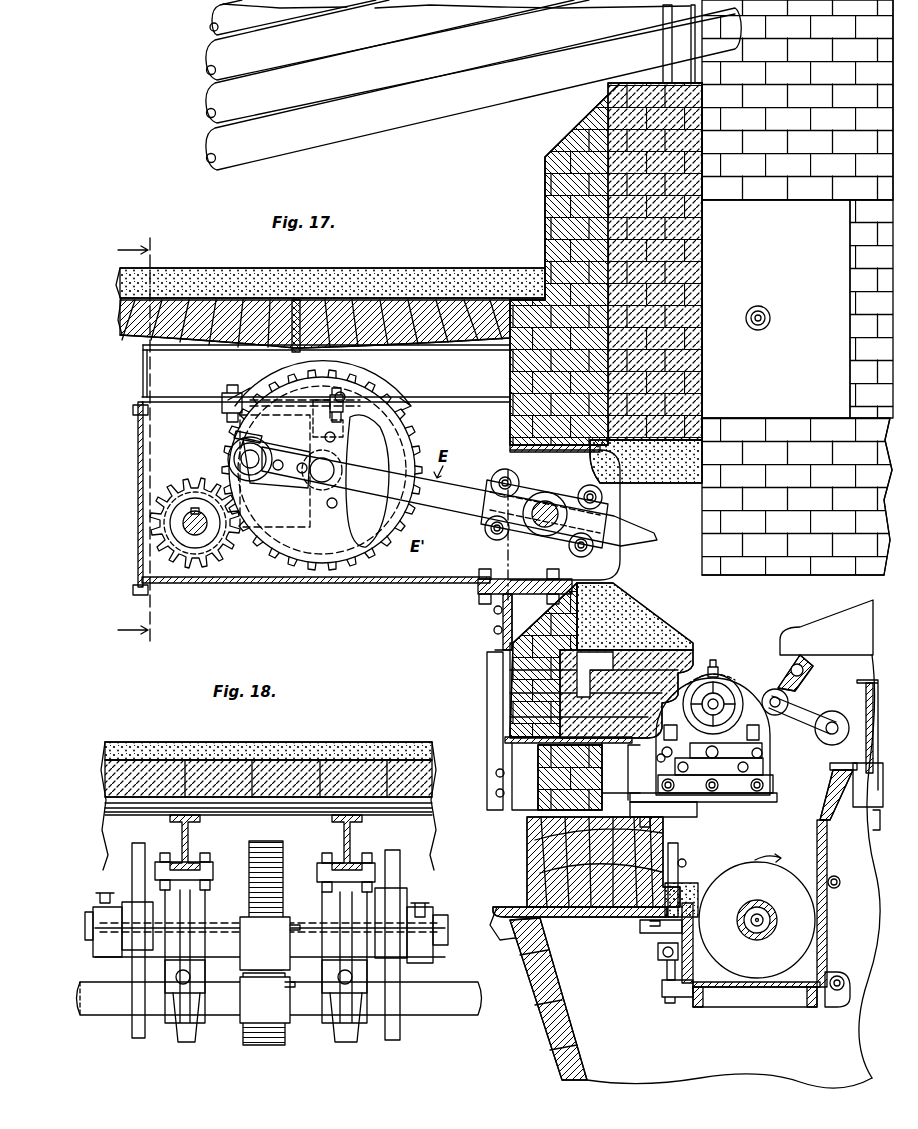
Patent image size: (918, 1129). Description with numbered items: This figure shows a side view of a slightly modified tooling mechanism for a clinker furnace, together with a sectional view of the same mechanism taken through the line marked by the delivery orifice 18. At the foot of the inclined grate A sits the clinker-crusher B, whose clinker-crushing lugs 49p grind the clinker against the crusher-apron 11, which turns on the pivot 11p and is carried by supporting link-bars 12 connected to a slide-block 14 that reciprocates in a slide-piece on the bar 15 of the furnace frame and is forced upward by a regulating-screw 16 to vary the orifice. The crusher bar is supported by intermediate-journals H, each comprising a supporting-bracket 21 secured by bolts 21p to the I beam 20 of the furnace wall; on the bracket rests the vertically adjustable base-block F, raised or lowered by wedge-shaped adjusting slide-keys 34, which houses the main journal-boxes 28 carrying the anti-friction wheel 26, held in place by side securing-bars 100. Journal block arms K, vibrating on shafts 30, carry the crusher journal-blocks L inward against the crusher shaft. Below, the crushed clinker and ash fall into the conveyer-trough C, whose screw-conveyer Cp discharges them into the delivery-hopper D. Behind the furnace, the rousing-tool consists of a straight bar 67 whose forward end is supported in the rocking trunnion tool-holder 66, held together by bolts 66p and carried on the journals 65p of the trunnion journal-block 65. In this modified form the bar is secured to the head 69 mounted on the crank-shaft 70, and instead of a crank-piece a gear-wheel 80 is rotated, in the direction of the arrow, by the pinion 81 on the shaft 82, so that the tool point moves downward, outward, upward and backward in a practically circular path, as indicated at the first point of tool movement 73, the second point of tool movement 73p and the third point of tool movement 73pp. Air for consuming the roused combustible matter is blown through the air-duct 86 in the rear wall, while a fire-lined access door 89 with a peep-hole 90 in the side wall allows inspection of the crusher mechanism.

In FIG. 17, the access door 89 is at (797, 287).
In FIG. 17, the peep-hole 90 is at (771, 318).
In FIG. 17, the delivery orifice 18 is at (745, 687).
In FIG. 17, the gear-wheel 80 is at (408, 440).
In FIG. 18, the gear-wheel 80 is at (283, 852).
In FIG. 17, the pinion 81 is at (196, 480).
In FIG. 18, the pinion 81 is at (277, 1048).
In FIG. 17, the shaft 82 is at (197, 537).
In FIG. 18, the shaft 82 is at (343, 1007).
In FIG. 17, the crank-shaft 70 is at (240, 455).
In FIG. 17, the head 69 is at (286, 455).
In FIG. 18, the head 69 is at (103, 957).
In FIG. 17, the straight bar 67 is at (459, 496).
In FIG. 18, the straight bar 67 is at (103, 977).
In FIG. 17, the trunnion tool-holder 66 is at (532, 492).
In FIG. 17, the bolts 66p is at (490, 531).
In FIG. 17, the trunnion journal-block 65 is at (563, 568).
In FIG. 17, the journals 65p is at (547, 532).
In FIG. 17, the point of tool movement 73 is at (700, 598).
In FIG. 17, the point of tool movement 73p is at (795, 552).
In FIG. 17, the point of tool movement 73pp is at (646, 473).
In FIG. 17, the air-duct 86 is at (601, 660).
In FIG. 17, the clinker-crushing lugs 49p is at (712, 667).
In FIG. 17, the crusher-apron 11 is at (773, 689).
In FIG. 17, the pivot 11p is at (800, 652).
In FIG. 17, the supporting link-bars 12 is at (772, 760).
In FIG. 17, the slide-block 14 is at (843, 717).
In FIG. 17, the bar of furnace-frame 15 is at (870, 743).
In FIG. 17, the regulating-screw 16 is at (845, 878).
In FIG. 17, the I beam 20 is at (683, 840).
In FIG. 17, the supporting-bracket 21 is at (663, 812).
In FIG. 17, the bolts 21p is at (680, 865).
In FIG. 17, the anti-friction wheel 26 is at (723, 770).
In FIG. 17, the main journal-boxes 28 is at (745, 768).
In FIG. 17, the shafts 30 is at (658, 760).
In FIG. 17, the adjusting slide-keys 34 is at (778, 797).
In FIG. 17, the side securing-bars 100 is at (765, 780).
In FIG. 17, the grate A is at (826, 627).
In FIG. 17, the clinker-crusher B is at (725, 672).
In FIG. 17, the conveyer-trough C is at (757, 907).
In FIG. 17, the screw-conveyer Cp is at (769, 920).
In FIG. 17, the delivery-hopper D is at (685, 871).
In FIG. 17, the base-block F is at (712, 766).
In FIG. 17, the intermediate-journals H is at (745, 808).
In FIG. 17, the journal block arms K is at (650, 746).
In FIG. 17, the crusher journal-blocks L is at (711, 721).